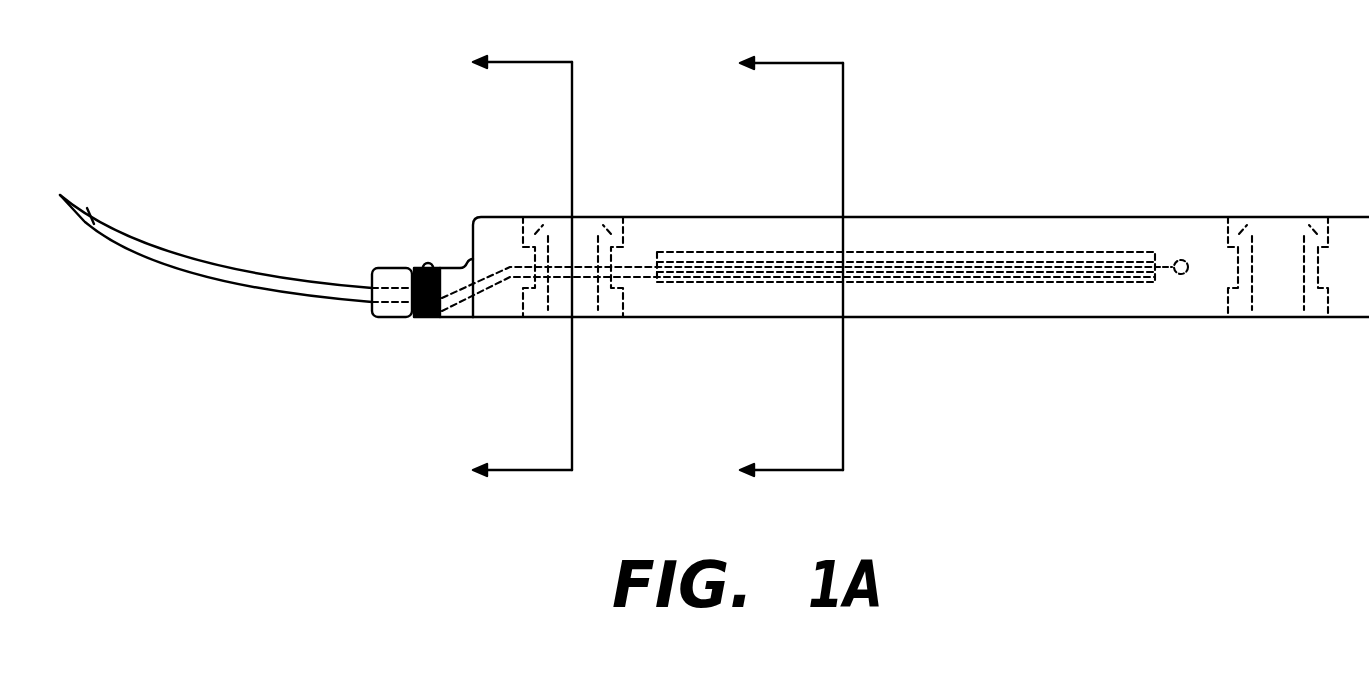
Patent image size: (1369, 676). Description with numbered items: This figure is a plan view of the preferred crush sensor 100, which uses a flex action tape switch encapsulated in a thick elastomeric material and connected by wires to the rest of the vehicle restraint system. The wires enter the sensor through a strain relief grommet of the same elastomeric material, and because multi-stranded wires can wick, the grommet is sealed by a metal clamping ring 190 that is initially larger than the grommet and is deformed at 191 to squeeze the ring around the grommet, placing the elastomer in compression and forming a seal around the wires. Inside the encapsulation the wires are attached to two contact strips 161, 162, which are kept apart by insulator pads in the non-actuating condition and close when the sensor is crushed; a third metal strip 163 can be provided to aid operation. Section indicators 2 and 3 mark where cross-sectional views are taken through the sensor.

The crush sensor 100 is at (1117, 216).
The contact strip 161 is at (1030, 272).
The contact strip 162 is at (1113, 283).
The third metal strip 163 is at (1010, 255).
The metal clamping ring 190 is at (428, 318).
The deformation of the clamping ring 191 is at (423, 266).
The section line 2- 2 is at (493, 273).
The section line 3- 3 is at (766, 272).